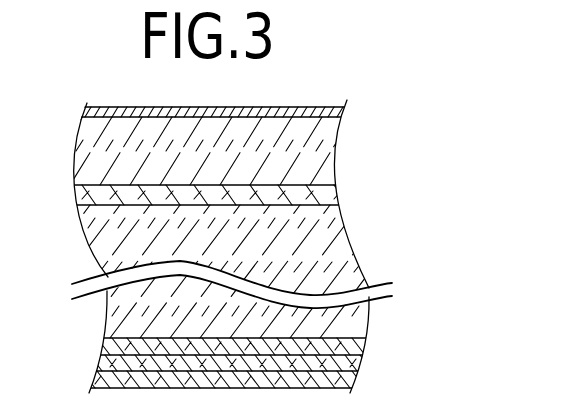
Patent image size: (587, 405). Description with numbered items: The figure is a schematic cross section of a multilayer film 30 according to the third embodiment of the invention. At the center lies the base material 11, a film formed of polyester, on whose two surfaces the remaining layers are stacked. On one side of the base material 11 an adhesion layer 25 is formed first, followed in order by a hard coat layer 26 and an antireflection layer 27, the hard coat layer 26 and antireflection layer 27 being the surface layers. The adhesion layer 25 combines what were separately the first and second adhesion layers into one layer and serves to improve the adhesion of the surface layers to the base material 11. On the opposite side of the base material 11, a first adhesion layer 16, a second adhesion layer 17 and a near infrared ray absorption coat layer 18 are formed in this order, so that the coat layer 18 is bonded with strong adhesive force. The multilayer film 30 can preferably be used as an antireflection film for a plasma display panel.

The multilayer film 30 is at (263, 100).
The antireflection layer 27 is at (333, 112).
The hard coat layer 26 is at (332, 150).
The adhesion layer 25 is at (334, 203).
The base material 11 is at (345, 262).
The first adhesion layer 16 is at (362, 345).
The second adhesion layer 17 is at (357, 358).
The near infrared ray absorption coat layer 18 is at (356, 379).